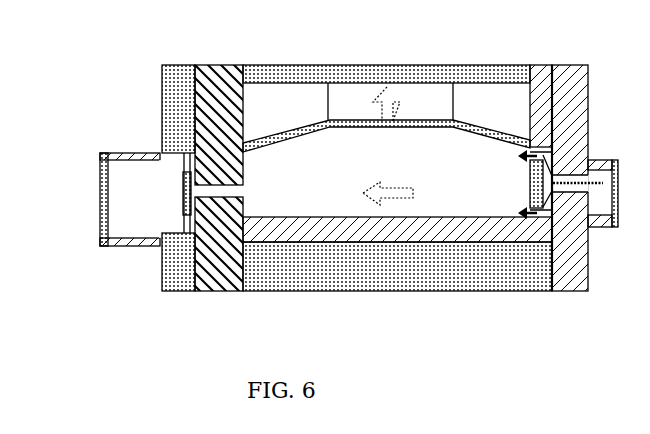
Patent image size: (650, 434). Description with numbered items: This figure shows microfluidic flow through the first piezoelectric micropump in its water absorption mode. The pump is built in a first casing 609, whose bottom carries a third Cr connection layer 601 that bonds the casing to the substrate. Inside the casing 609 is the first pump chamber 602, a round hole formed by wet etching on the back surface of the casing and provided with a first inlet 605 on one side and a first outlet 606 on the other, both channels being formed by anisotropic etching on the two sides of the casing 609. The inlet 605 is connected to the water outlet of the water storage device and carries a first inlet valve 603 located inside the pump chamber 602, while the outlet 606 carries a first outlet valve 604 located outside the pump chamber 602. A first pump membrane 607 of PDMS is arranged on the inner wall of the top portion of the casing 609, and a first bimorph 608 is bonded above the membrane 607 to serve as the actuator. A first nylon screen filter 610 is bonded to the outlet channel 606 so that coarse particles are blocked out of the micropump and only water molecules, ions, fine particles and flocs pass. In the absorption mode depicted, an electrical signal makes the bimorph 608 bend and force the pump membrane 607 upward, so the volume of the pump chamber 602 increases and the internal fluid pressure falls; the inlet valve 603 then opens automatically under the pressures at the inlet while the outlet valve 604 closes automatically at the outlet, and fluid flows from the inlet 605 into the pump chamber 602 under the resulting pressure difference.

The third Cr connection layer 601 is at (283, 250).
The first pump chamber 602 is at (360, 187).
The first inlet valve 603 is at (535, 177).
The first outlet valve 604 is at (190, 193).
The first inlet 605 is at (600, 208).
The first outlet 606 is at (152, 173).
The first pump membrane 607 is at (293, 132).
The first bimorph 608 is at (413, 73).
The first casing 609 is at (568, 70).
The first nylon screen filter 610 is at (107, 213).